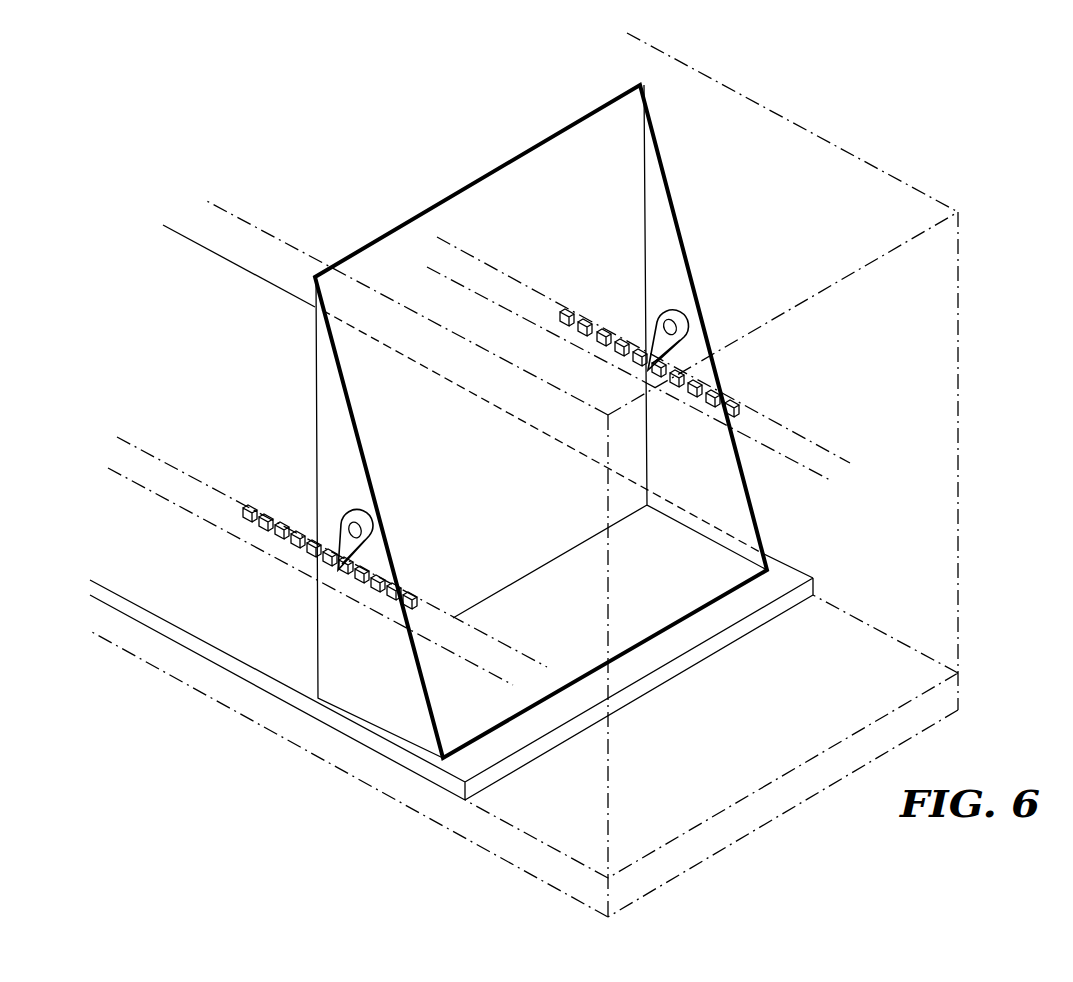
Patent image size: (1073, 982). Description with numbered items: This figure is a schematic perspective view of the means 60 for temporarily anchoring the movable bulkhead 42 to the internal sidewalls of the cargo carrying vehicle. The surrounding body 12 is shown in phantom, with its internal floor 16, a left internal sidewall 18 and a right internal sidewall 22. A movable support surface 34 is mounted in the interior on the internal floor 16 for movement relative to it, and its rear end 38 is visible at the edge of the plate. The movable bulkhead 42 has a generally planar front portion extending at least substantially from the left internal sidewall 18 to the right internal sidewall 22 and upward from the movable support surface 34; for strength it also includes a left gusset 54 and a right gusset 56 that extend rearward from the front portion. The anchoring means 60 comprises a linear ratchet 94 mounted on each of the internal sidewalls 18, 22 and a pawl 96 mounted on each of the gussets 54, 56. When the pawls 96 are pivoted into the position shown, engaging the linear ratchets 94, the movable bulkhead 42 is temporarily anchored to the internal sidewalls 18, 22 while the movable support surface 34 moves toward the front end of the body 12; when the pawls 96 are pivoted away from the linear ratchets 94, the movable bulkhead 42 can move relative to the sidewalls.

The body 12 is at (893, 181).
The internal floor 16 is at (696, 781).
The left internal sidewall 18 is at (194, 418).
The right internal sidewall 22 is at (771, 210).
The movable support surface 34 is at (234, 610).
The rear end 38 is at (727, 647).
The movable bulkhead 42 is at (564, 225).
The left gusset 54 is at (354, 676).
The right gusset 56 is at (679, 478).
The means for temporarily anchoring 60 is at (627, 320).
The linear ratchet 94 is at (527, 287).
The pawl 96 is at (365, 549).